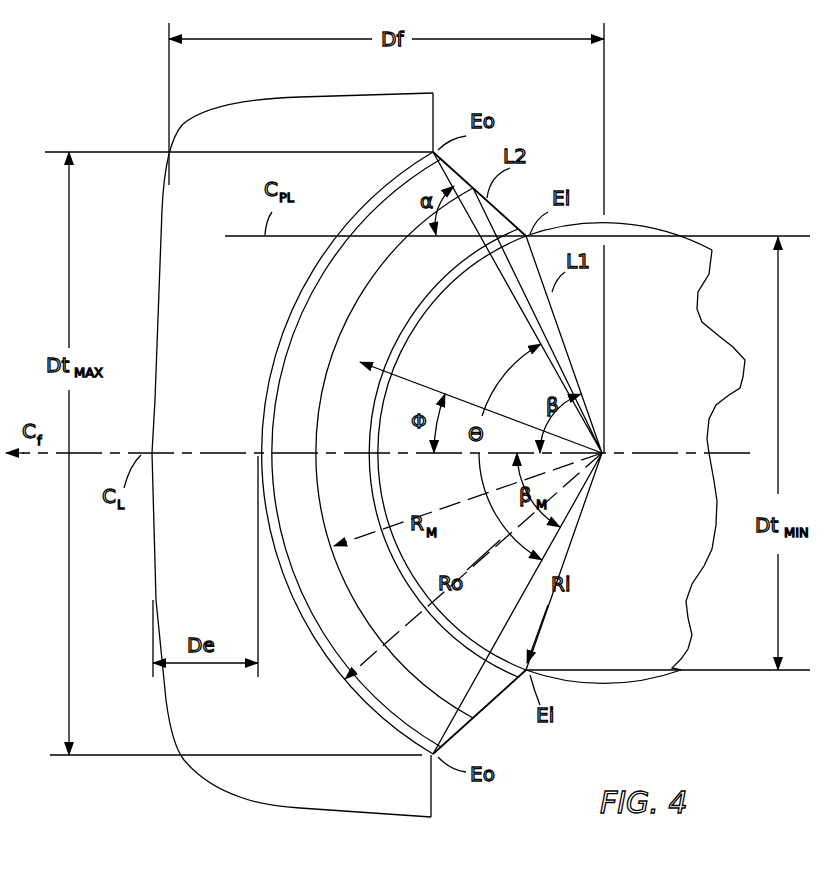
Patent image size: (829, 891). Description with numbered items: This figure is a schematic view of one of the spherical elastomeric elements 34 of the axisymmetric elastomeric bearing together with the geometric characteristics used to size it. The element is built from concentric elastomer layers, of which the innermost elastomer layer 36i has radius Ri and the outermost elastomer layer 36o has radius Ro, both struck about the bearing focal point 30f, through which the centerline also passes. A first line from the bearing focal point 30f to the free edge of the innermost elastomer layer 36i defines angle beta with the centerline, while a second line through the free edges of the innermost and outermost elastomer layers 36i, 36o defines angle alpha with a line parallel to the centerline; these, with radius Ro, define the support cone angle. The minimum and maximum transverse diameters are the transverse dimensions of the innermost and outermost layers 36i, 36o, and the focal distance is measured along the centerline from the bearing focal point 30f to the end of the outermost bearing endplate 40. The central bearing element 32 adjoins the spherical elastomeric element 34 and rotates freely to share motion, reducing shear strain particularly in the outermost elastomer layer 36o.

The bearing focal point 30f is at (606, 456).
The central bearing element 32 is at (662, 636).
The spherical elastomeric element 34 is at (297, 393).
The outermost elastomer layer 36o is at (318, 277).
The innermost elastomer layer 36i is at (420, 305).
The outermost bearing endplate 40 is at (182, 703).